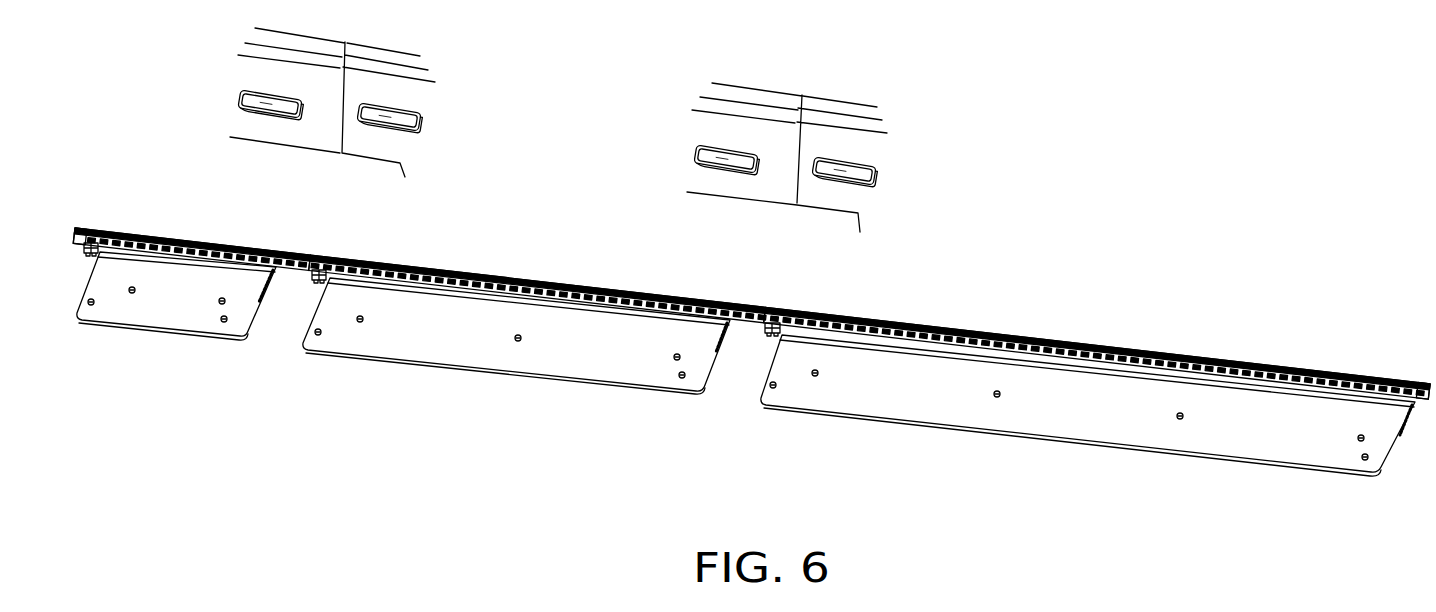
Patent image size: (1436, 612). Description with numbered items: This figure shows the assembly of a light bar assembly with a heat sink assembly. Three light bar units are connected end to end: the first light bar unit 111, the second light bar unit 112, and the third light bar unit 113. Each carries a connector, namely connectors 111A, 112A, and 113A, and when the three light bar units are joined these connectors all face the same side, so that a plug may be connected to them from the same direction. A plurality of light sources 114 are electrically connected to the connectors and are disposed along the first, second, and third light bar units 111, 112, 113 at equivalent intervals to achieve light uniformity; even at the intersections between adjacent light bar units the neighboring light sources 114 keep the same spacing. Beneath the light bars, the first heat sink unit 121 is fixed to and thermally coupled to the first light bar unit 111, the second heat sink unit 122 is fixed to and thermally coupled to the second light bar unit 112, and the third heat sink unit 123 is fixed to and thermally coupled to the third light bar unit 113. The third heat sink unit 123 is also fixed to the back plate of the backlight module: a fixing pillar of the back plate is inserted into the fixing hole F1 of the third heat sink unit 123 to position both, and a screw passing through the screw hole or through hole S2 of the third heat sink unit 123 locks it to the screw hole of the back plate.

The first light bar unit 111 is at (152, 241).
The second light bar unit 112 is at (391, 264).
The third light bar unit 113 is at (847, 316).
The connector 111A is at (88, 226).
The connector 112A is at (310, 281).
The connector 113A is at (766, 334).
The light source 114 is at (236, 105).
The first heat sink unit 121 is at (157, 317).
The second heat sink unit 122 is at (490, 357).
The third heat sink unit 123 is at (1097, 428).
The screw hole S2 is at (776, 388).
The fixing hole F1 is at (818, 375).